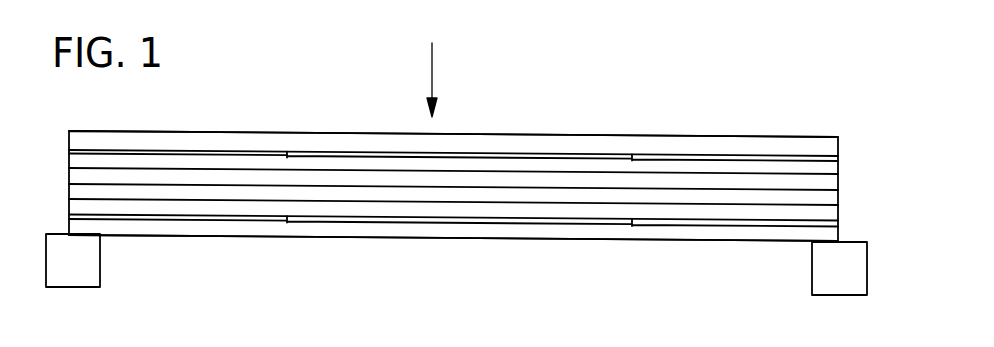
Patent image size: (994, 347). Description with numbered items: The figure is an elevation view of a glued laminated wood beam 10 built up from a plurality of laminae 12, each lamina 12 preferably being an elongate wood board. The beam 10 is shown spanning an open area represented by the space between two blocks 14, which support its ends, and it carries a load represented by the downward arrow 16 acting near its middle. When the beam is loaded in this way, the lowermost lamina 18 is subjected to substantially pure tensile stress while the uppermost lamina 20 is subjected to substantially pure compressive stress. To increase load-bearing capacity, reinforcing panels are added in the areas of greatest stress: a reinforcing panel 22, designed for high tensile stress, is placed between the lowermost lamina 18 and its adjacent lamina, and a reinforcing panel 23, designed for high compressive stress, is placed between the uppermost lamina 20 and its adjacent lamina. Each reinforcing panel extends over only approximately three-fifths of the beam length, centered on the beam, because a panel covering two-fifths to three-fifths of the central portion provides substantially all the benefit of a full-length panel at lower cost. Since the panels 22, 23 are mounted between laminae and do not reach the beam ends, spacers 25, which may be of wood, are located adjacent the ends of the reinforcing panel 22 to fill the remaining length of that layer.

The glued laminated wood beam 10 is at (784, 118).
The laminae 12 is at (67, 225).
The blocks 14 is at (72, 287).
The arrow 16 is at (433, 77).
The lowermost lamina 18 is at (182, 236).
The uppermost lamina 20 is at (205, 131).
The reinforcing panel 22 is at (533, 223).
The reinforcing panel 23 is at (540, 152).
The spacers 25 is at (238, 151).